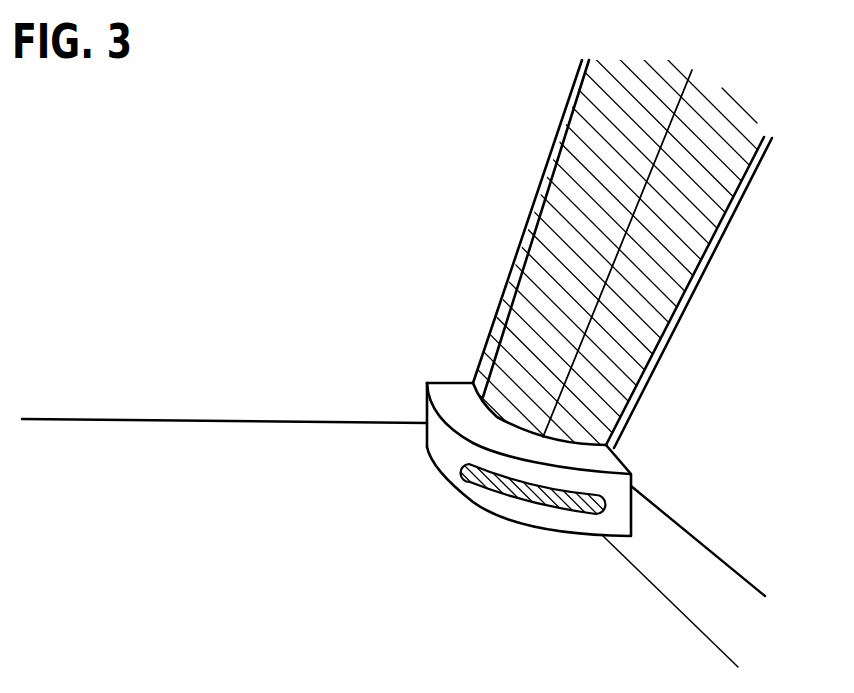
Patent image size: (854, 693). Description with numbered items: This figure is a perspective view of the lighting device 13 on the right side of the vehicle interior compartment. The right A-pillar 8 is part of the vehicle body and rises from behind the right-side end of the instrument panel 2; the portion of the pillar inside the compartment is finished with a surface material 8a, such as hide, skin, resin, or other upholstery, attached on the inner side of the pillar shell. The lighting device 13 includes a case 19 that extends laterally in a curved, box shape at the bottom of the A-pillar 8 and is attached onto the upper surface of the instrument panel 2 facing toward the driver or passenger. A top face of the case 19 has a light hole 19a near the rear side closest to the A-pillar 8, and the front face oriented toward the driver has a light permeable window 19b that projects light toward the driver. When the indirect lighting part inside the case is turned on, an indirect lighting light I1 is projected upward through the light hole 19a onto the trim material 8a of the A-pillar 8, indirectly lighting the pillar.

The instrument panel 2 is at (327, 440).
The A-pillar 8 is at (728, 227).
The surface material 8a is at (529, 223).
The indirect lighting light I1 is at (607, 130).
The lighting device 13 is at (430, 378).
The case 19 is at (443, 450).
The light hole 19a is at (578, 442).
The light permeable window 19b is at (510, 500).